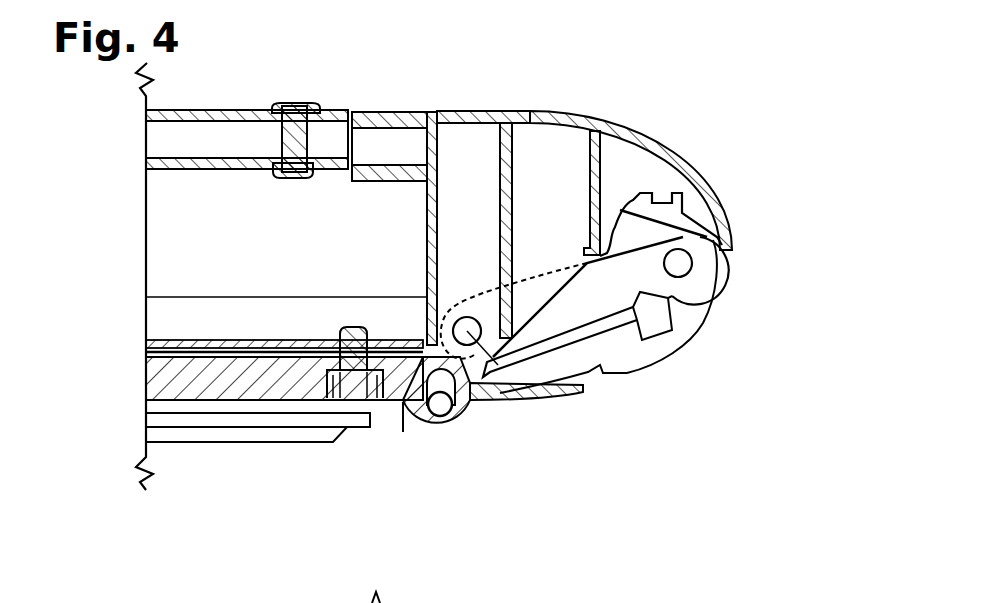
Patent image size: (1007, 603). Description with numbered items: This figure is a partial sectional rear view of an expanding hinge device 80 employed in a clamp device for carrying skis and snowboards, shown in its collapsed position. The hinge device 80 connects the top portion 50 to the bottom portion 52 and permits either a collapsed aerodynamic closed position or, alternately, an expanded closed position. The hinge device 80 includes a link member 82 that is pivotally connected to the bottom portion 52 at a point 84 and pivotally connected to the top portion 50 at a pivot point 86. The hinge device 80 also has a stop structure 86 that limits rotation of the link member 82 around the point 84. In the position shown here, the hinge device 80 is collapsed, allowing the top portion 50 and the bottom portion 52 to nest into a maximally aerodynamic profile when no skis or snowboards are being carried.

The top portion 50 is at (233, 107).
The bottom portion 52 is at (258, 405).
The hinge device 80 is at (739, 137).
The link member 82 is at (622, 285).
The point 84 is at (678, 263).
The stop structure 86 is at (657, 210).